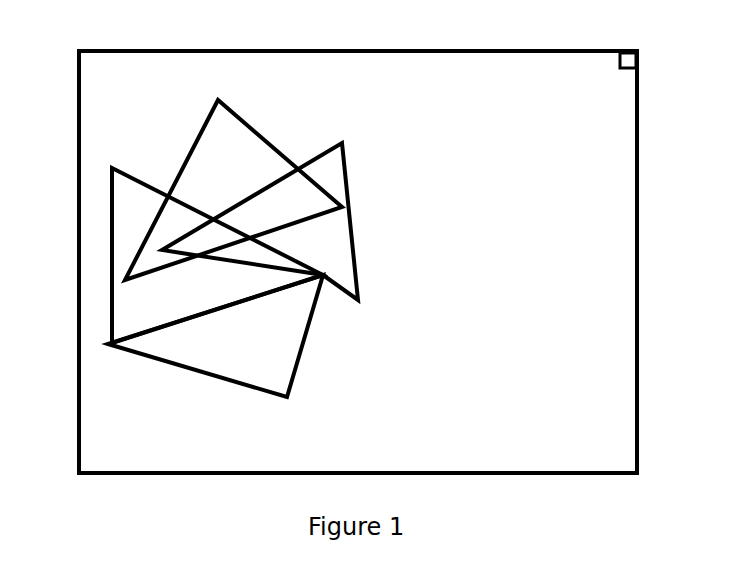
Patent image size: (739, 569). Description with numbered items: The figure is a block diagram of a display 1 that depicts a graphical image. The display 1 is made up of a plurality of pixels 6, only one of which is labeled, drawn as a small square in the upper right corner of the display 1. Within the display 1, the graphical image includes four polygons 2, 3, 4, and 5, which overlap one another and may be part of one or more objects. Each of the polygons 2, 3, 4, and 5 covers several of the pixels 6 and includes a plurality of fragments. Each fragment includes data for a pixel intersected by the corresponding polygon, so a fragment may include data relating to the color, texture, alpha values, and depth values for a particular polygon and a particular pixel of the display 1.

The display 1 is at (353, 18).
The polygon 2 is at (112, 238).
The polygon 3 is at (200, 137).
The polygon 4 is at (157, 360).
The polygon 5 is at (358, 299).
The pixel 6 is at (639, 60).